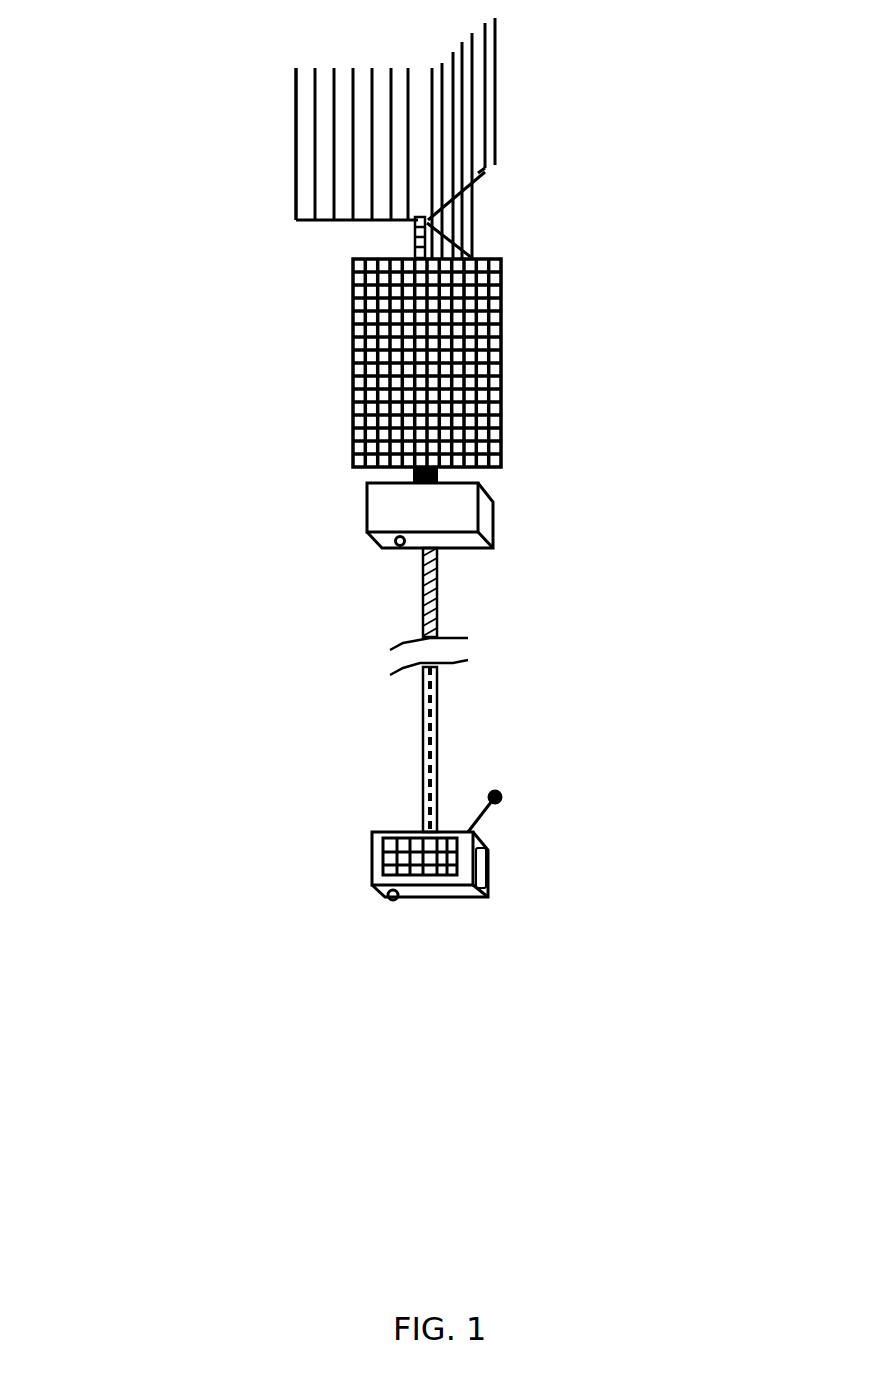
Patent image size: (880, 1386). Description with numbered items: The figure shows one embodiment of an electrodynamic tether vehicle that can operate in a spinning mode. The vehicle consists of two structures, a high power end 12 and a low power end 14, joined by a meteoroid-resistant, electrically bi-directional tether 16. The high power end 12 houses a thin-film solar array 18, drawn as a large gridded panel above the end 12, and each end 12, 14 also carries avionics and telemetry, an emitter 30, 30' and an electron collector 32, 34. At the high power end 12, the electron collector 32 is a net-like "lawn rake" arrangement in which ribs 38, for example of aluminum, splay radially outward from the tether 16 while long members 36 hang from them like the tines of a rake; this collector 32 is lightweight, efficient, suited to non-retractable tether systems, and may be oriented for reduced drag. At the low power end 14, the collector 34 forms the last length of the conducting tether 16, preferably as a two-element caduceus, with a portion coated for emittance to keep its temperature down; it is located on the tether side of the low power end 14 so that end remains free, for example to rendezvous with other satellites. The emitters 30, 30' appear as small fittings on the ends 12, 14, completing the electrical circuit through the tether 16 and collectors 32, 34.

The high power end 12 is at (510, 522).
The low power end 14 is at (507, 865).
The tether 16 is at (413, 242).
The solar array 18 is at (345, 372).
The emitter 30 is at (317, 630).
The emitter 30' is at (308, 981).
The electron collector 32 is at (285, 187).
The electron collector 34 is at (437, 758).
The long members 36 is at (317, 148).
The ribs 38 is at (478, 173).